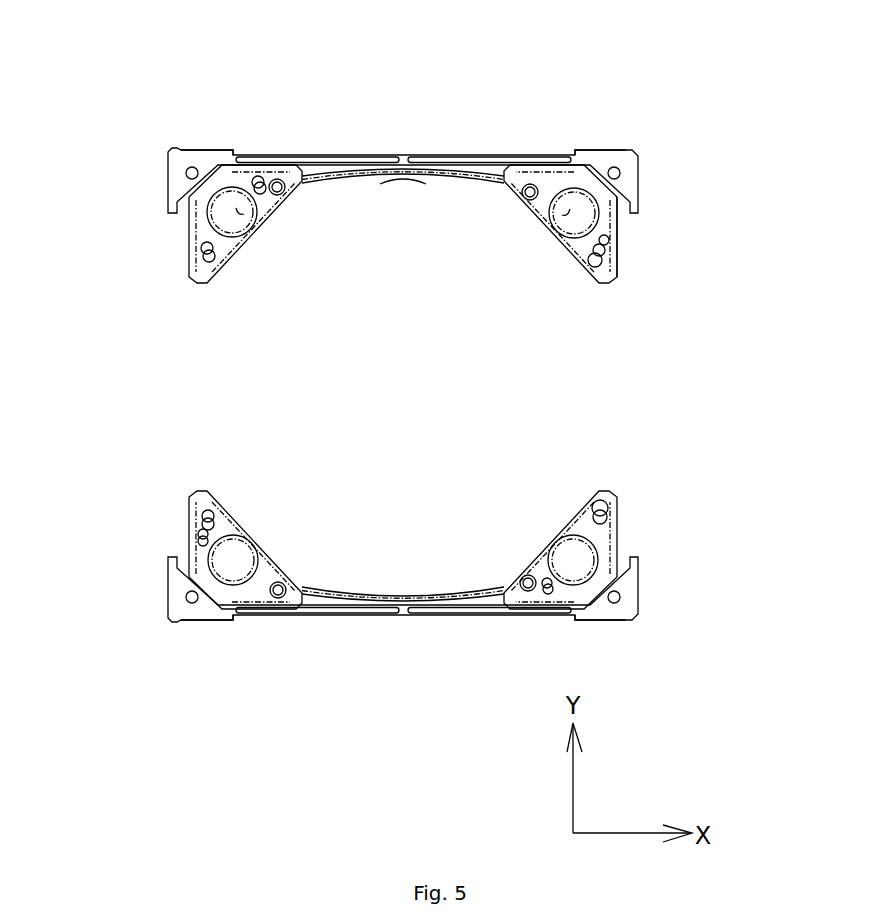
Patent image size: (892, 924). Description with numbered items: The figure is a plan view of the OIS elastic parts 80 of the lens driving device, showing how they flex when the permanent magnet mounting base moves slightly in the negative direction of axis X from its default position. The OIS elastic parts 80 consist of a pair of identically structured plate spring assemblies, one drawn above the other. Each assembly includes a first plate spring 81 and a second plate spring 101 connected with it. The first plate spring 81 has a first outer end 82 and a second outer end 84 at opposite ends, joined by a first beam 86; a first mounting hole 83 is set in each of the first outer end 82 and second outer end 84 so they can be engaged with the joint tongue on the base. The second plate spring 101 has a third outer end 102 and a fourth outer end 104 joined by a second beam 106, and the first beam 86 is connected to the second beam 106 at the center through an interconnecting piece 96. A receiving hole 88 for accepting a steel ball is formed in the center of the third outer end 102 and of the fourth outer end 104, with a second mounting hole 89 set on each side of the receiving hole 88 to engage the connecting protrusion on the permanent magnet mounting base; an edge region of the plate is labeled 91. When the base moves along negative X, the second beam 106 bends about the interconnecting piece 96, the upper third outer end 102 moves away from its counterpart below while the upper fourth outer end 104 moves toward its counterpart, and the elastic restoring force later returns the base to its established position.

The OIS elastic part 80 is at (160, 122).
The first plate spring 81 is at (500, 140).
The first outer end 82 is at (196, 150).
The first mounting hole 83 is at (188, 172).
The second outer end 84 is at (595, 150).
The first beam 86 is at (298, 155).
The receiving hole 88 is at (245, 225).
The second mounting hole 89 is at (205, 262).
The plate side edge 91 is at (617, 228).
The interconnecting piece 96 is at (398, 158).
The second plate spring 101 is at (392, 200).
The third outer end 102 is at (243, 215).
The fourth outer end 104 is at (600, 260).
The second beam 106 is at (447, 158).